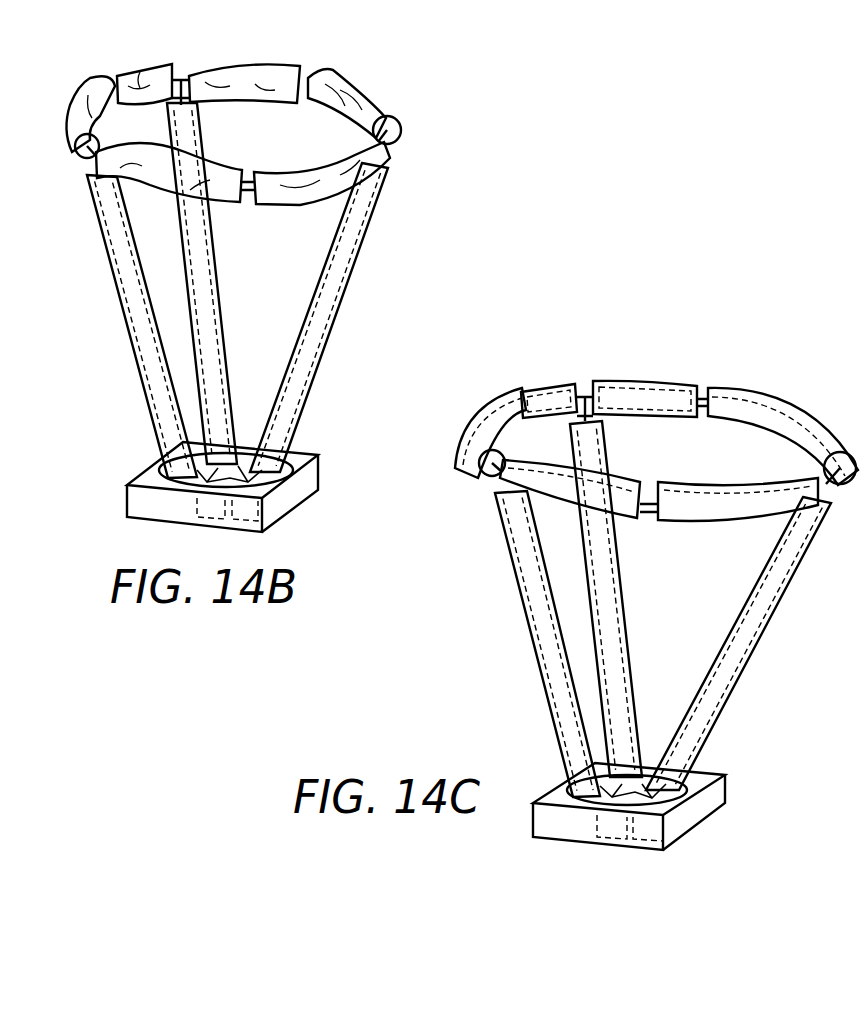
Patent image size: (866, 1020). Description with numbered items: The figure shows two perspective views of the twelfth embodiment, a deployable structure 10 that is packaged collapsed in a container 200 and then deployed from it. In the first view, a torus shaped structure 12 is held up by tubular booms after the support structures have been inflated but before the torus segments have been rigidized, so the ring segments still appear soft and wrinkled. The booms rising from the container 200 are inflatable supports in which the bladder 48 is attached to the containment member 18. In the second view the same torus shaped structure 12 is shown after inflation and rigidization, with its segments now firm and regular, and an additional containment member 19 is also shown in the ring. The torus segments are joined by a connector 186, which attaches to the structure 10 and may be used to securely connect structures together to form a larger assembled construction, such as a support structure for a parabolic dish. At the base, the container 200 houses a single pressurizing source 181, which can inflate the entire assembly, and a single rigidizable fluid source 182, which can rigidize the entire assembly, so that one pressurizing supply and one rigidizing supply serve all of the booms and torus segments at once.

In FIG. 14C, the structure 10 is at (763, 707).
In FIG. 14B, the torus shaped structure 12 is at (84, 92).
In FIG. 14C, the torus shaped structure 12 is at (471, 406).
In FIG. 14B, the containment member 18 is at (128, 331).
In FIG. 14C, the additional containment member 19 is at (650, 380).
In FIG. 14B, the bladder 48 is at (303, 372).
In FIG. 14C, the bladder 48 is at (770, 598).
In FIG. 14C, the pressurizing source 181 is at (648, 832).
In FIG. 14C, the rigidizable fluid source 182 is at (610, 830).
In FIG. 14C, the connector 186 is at (583, 390).
In FIG. 14C, the container 200 is at (538, 838).